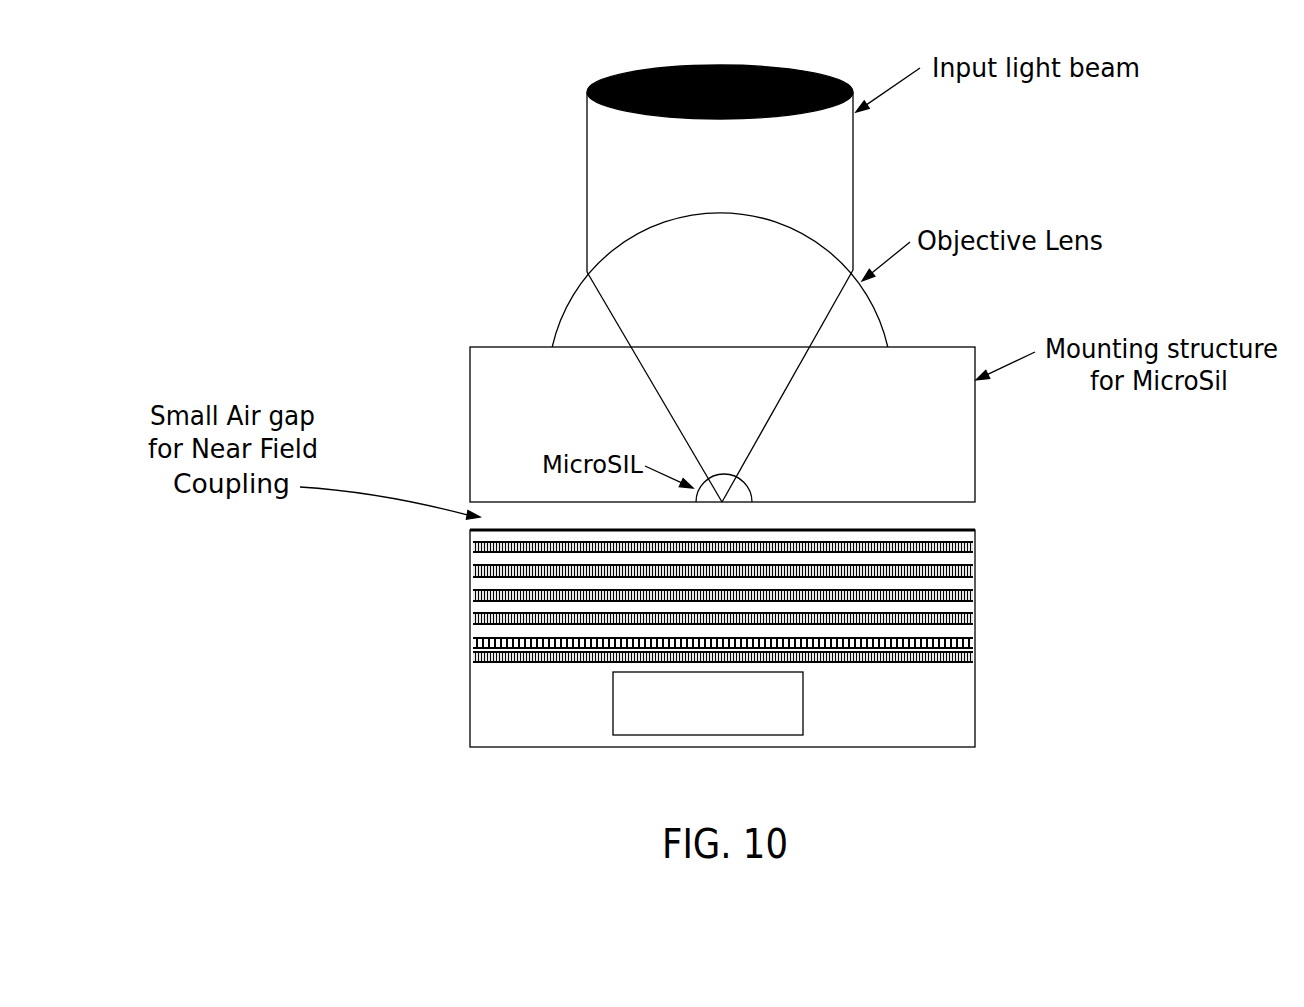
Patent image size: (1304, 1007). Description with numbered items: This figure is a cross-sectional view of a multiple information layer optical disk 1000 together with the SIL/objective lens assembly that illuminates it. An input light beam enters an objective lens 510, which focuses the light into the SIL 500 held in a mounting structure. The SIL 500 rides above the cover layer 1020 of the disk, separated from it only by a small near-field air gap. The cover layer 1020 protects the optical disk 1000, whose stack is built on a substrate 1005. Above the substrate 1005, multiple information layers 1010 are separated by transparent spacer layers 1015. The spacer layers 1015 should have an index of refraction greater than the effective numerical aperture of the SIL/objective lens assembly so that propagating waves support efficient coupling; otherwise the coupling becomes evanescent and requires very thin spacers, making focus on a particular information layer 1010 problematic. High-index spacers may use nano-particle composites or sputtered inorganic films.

The SIL 500 is at (748, 489).
The objective lens 510 is at (771, 307).
The optical disk 1000 is at (751, 613).
The substrate 1005 is at (959, 718).
The information layers 1010 is at (459, 555).
The spacer layers 1015 is at (987, 566).
The cover layer 1020 is at (988, 526).